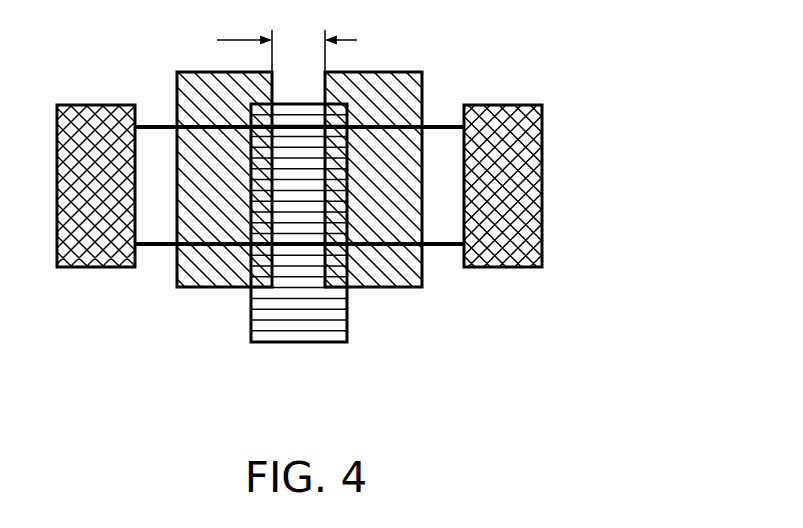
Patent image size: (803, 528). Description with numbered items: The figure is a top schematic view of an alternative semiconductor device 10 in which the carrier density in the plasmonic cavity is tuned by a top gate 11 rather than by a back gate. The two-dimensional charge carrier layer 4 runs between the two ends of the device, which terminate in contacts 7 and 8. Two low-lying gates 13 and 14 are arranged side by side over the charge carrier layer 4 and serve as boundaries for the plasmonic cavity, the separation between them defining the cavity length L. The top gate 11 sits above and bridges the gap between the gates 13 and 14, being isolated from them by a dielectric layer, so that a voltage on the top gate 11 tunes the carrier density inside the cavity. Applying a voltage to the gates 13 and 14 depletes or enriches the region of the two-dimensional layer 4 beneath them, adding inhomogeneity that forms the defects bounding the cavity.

The semiconductor device 10 is at (373, 207).
The two-dimensional charge carrier layer 4 is at (165, 233).
The contact 7 is at (100, 110).
The contact 8 is at (506, 149).
The top gate 11 is at (293, 320).
The low-lying gate 13 is at (187, 163).
The low-lying gate 14 is at (413, 152).